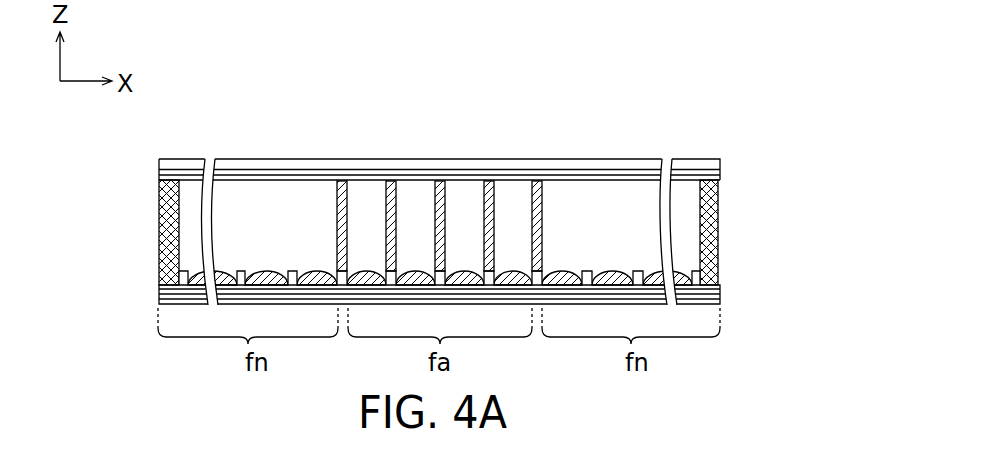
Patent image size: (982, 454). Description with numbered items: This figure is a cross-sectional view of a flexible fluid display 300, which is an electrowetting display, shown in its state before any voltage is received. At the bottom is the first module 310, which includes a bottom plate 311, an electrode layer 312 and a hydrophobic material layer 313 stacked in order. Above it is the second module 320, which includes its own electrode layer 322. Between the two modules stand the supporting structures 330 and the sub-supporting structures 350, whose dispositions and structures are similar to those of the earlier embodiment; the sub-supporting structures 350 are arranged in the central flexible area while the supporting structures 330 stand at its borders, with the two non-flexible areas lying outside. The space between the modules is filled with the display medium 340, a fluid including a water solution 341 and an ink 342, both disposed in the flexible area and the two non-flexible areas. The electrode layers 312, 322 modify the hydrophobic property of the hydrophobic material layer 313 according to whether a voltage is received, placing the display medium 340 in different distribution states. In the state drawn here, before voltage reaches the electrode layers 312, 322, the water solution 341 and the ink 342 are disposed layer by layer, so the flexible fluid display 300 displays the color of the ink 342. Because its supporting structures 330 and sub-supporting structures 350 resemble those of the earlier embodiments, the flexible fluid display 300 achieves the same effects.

The flexible fluid display 300 is at (827, 57).
The first module 310 is at (787, 242).
The bottom plate 311 is at (719, 303).
The electrode layer 312 is at (719, 295).
The hydrophobic material layer 313 is at (719, 287).
The second module 320 is at (703, 142).
The electrode layer 322 is at (713, 173).
The supporting structures 330 is at (538, 185).
The display medium 340 is at (92, 185).
The water solution 341 is at (193, 200).
The ink 342 is at (265, 270).
The sub-supporting structures 350 is at (489, 185).